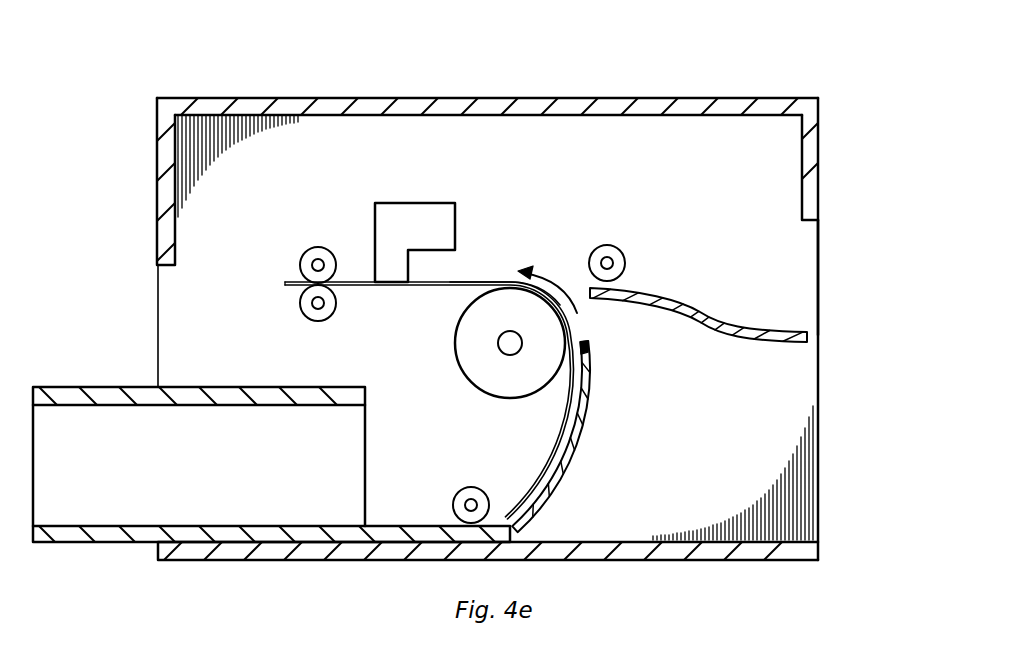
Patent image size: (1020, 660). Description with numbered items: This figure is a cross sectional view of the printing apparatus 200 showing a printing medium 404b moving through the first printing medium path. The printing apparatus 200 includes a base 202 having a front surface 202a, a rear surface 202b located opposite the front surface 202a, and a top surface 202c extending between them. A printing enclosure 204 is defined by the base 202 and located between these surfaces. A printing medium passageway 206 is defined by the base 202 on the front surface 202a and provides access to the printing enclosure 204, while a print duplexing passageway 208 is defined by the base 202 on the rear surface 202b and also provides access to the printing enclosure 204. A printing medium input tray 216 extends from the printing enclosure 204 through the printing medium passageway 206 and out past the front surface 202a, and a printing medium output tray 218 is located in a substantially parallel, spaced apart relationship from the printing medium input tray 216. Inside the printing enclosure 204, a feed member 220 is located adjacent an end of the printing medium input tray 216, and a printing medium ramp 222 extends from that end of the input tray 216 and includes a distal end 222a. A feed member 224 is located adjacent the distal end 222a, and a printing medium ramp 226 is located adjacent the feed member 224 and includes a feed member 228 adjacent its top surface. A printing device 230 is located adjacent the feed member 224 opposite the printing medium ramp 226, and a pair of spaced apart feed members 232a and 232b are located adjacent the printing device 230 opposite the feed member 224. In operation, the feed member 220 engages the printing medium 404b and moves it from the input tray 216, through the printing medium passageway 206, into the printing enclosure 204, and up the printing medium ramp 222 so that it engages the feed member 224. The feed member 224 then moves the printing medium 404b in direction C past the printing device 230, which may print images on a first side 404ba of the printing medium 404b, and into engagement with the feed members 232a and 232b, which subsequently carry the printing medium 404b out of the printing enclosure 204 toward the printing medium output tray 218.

The printing apparatus 200 is at (697, 63).
The base 202 is at (283, 97).
The front surface 202a is at (157, 140).
The rear surface 202b is at (819, 130).
The top surface 202c is at (487, 96).
The printing enclosure 204 is at (562, 162).
The printing medium passageway 206 is at (157, 268).
The print duplexing passageway 208 is at (802, 224).
The printing medium input tray 216 is at (100, 545).
The printing medium output tray 218 is at (110, 387).
The feed member 220 is at (455, 490).
The printing medium ramp 222 is at (564, 461).
The distal end 222a is at (590, 343).
The feed member 224 is at (500, 398).
The printing medium ramp 226 is at (742, 341).
The feed member 228 is at (612, 248).
The printing device 230 is at (413, 203).
The feed member 232a is at (312, 248).
The feed member 232b is at (312, 321).
The printing medium 404b is at (420, 288).
The first side 404ba is at (490, 281).